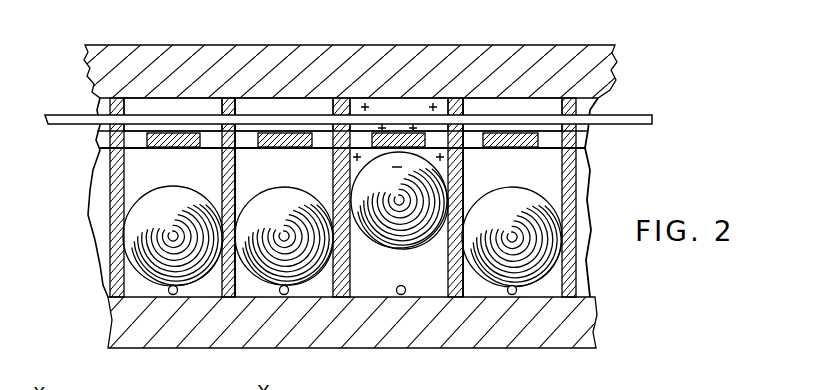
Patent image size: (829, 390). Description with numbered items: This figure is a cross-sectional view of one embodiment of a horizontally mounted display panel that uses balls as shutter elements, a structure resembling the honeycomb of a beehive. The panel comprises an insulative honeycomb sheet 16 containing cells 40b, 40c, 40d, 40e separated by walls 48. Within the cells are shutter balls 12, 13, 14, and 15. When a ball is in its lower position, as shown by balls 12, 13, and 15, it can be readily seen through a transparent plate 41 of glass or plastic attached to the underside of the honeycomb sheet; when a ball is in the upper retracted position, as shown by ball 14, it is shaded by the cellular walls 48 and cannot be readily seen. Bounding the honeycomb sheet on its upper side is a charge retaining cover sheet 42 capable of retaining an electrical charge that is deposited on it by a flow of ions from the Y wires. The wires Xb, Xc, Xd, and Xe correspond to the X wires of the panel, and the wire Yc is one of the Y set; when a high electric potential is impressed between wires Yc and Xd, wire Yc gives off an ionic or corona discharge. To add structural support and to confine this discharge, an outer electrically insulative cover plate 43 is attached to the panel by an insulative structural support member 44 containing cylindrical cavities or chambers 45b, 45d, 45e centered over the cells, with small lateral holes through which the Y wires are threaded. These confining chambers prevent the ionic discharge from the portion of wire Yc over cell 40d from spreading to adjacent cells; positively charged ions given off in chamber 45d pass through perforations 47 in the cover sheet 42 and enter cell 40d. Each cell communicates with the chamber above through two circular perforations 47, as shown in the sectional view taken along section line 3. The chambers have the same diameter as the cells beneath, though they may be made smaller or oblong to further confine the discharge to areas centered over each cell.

The section line 3 is at (37, 115).
The shutter ball 12 is at (201, 196).
The shutter ball 13 is at (319, 200).
The shutter ball 14 is at (415, 245).
The shutter ball 15 is at (483, 280).
The insulative honeycomb sheet 16 is at (98, 265).
The cell 40b is at (160, 173).
The cell 40c is at (274, 173).
The cell 40d is at (389, 266).
The cell 40e is at (499, 185).
The transparent plate 41 is at (583, 335).
The charge retaining cover sheet 42 is at (510, 151).
The outer electrically insulative cover plate 43 is at (602, 63).
The insulative structural support member 44 is at (107, 103).
The chamber 45b is at (160, 107).
The chamber 45d is at (390, 110).
The chamber 45e is at (507, 108).
The perforations 47 is at (322, 142).
The walls 48 is at (571, 182).
The X wire Xb is at (178, 292).
The X wire Xc is at (288, 292).
The X wire Xd is at (403, 292).
The X wire Xe is at (516, 292).
The Y wire Yc is at (633, 115).